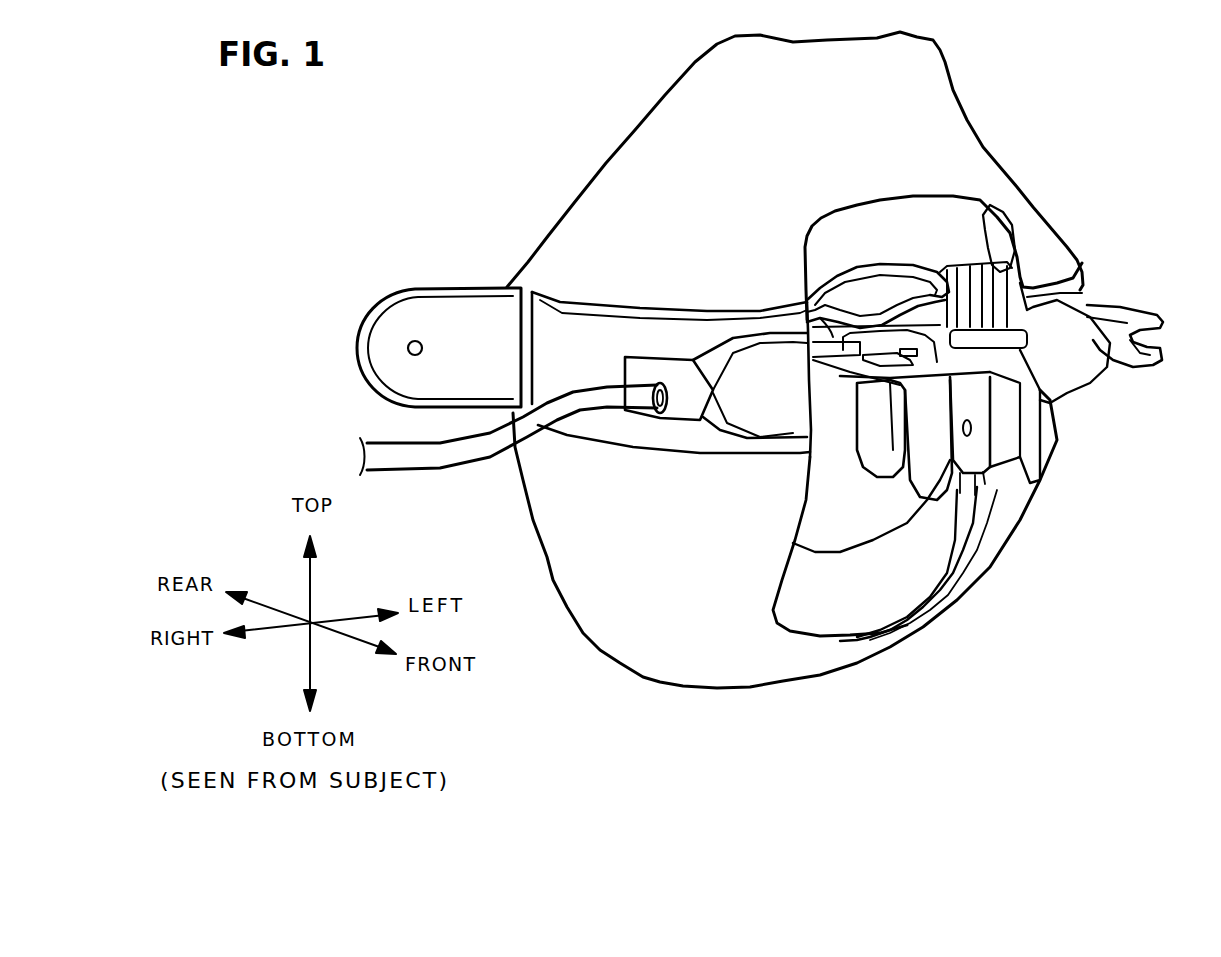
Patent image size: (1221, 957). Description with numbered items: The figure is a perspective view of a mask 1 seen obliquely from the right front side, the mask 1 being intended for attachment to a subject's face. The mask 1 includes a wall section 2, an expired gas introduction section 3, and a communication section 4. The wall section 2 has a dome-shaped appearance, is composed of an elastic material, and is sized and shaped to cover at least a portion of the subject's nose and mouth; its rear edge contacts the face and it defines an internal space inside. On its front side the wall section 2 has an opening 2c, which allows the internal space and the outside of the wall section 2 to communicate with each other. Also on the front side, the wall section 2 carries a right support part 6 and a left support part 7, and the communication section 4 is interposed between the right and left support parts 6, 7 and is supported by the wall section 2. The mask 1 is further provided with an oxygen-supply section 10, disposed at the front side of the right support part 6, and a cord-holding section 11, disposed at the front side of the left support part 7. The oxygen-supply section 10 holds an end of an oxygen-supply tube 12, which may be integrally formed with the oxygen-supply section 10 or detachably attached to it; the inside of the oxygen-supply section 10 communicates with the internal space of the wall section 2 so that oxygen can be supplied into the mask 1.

The mask 1 is at (1084, 88).
The wall section 2 is at (655, 158).
The opening 2c is at (943, 607).
The expired gas introduction section 3 is at (841, 562).
The communication section 4 is at (946, 516).
The right support part 6 is at (584, 326).
The left support part 7 is at (1082, 287).
The oxygen-supply section 10 is at (688, 373).
The cord-holding section 11 is at (1140, 310).
The oxygen-supply tube 12 is at (455, 460).